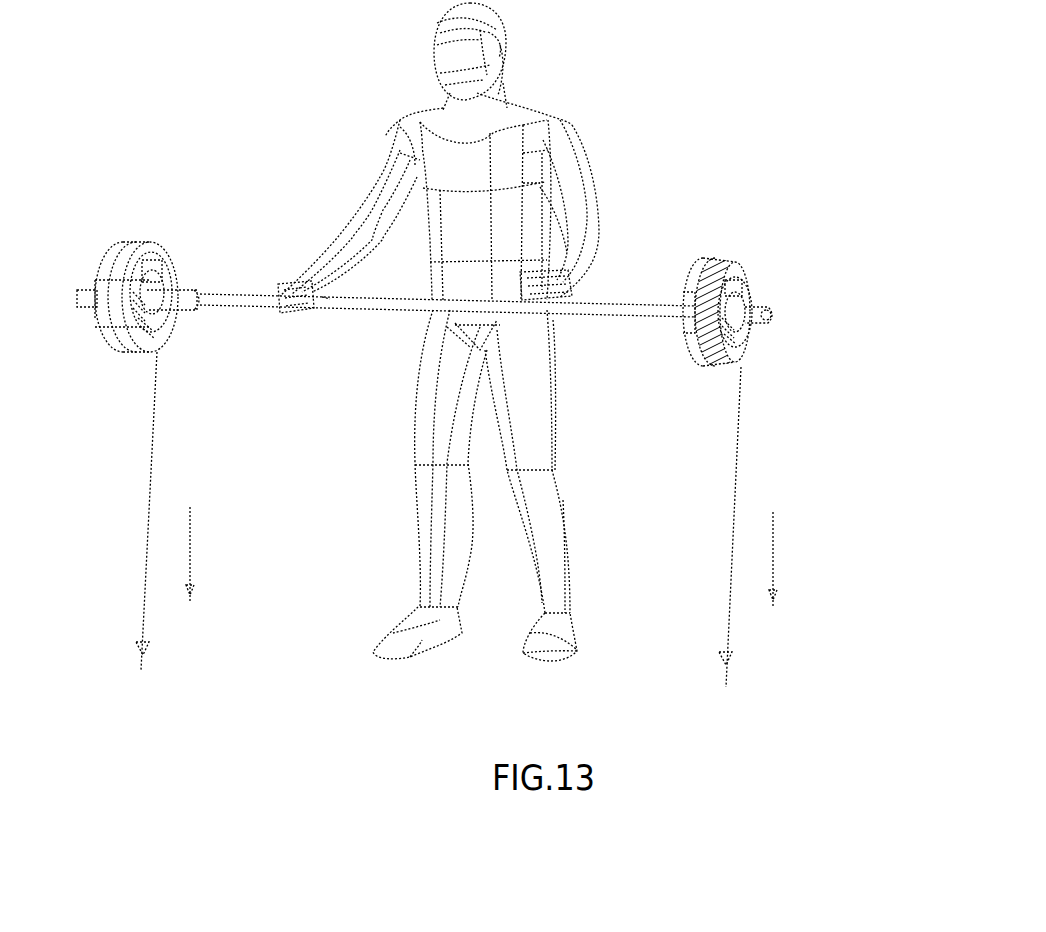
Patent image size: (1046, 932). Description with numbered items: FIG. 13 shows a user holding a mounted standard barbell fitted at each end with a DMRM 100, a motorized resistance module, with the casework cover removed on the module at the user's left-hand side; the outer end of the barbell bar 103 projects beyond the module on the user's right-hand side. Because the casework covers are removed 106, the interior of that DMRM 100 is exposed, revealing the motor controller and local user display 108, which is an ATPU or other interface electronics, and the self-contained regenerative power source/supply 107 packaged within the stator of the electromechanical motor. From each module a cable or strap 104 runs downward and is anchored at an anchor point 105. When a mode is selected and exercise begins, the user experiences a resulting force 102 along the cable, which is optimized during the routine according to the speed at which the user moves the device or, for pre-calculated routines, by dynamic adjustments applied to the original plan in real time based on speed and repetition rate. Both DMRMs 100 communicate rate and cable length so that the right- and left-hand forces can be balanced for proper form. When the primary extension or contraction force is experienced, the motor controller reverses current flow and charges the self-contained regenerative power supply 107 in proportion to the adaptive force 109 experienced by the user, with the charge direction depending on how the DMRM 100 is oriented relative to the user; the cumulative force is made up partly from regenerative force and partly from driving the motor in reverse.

The DMRM 100 is at (140, 243).
The resulting force 102 is at (202, 553).
The bar end 103 is at (82, 292).
The cable or strap 104 is at (148, 463).
The anchor point 105 is at (140, 642).
The casework covers removed 106 is at (728, 258).
The self-contained regenerative power source/supply 107 is at (745, 337).
The motor controller and local user display 108 is at (745, 293).
The adaptive force 109 is at (605, 289).